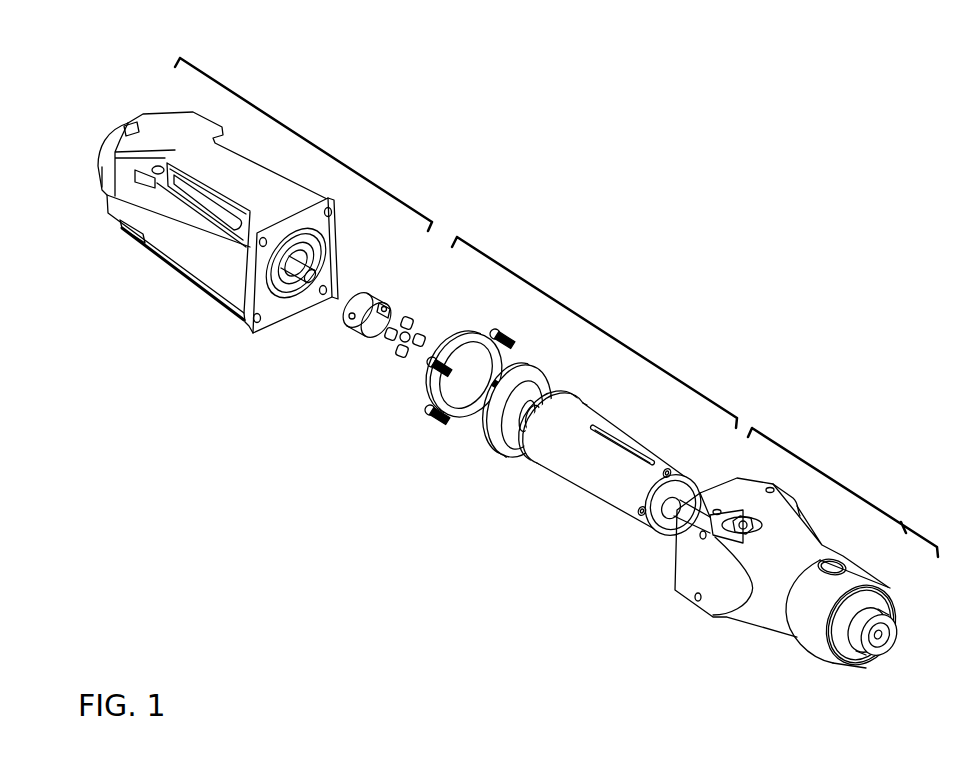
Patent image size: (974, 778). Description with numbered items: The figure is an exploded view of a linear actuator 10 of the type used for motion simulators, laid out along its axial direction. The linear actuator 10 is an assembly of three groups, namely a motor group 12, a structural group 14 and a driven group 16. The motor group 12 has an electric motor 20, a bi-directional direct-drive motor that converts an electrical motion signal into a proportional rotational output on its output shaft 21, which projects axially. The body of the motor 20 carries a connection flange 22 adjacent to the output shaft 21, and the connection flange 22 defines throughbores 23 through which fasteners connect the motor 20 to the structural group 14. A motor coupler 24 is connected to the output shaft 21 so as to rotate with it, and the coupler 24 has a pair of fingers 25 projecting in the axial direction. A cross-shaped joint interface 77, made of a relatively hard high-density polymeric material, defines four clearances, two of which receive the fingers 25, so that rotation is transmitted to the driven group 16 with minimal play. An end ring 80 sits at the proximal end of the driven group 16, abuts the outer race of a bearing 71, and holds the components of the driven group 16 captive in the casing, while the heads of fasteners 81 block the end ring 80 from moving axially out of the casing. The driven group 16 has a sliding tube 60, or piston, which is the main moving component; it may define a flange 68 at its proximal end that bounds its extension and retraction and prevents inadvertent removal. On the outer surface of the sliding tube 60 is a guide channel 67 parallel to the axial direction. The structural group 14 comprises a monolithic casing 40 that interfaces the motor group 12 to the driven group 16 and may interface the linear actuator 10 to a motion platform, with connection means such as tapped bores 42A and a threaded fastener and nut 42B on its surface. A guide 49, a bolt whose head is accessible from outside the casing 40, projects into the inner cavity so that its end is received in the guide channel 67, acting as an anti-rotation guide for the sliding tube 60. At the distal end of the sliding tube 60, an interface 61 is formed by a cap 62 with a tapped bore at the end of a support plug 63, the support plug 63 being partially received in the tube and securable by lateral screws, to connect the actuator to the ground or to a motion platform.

The linear actuator 10 is at (350, 498).
The motor group 12 is at (278, 120).
The structural group 14 is at (805, 453).
The driven group 16 is at (565, 303).
The electric motor 20 is at (162, 240).
The output shaft 21 is at (302, 275).
The connection flange 22 is at (290, 227).
The throughbores 23 is at (333, 213).
The motor coupler 24 is at (361, 297).
The fingers 25 is at (386, 305).
The joint interface 77 is at (400, 352).
The end ring 80 is at (432, 391).
The fasteners 81 is at (443, 352).
The bearing 71 is at (487, 448).
The flange 68 is at (530, 473).
The sliding tube 60 is at (587, 483).
The guide channel 67 is at (622, 441).
The support plug 63 is at (662, 523).
The casing 40 is at (742, 613).
The tapped bores 42A is at (698, 546).
The threaded fastener and nut 42B is at (742, 516).
The guide 49 is at (840, 560).
The cap 62 is at (890, 606).
The interface 61 is at (853, 657).